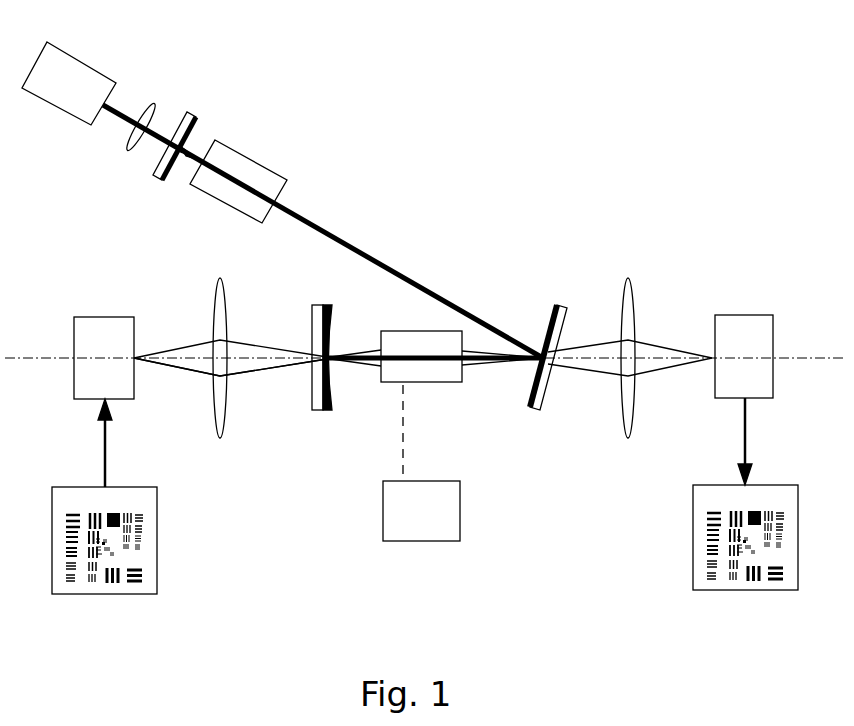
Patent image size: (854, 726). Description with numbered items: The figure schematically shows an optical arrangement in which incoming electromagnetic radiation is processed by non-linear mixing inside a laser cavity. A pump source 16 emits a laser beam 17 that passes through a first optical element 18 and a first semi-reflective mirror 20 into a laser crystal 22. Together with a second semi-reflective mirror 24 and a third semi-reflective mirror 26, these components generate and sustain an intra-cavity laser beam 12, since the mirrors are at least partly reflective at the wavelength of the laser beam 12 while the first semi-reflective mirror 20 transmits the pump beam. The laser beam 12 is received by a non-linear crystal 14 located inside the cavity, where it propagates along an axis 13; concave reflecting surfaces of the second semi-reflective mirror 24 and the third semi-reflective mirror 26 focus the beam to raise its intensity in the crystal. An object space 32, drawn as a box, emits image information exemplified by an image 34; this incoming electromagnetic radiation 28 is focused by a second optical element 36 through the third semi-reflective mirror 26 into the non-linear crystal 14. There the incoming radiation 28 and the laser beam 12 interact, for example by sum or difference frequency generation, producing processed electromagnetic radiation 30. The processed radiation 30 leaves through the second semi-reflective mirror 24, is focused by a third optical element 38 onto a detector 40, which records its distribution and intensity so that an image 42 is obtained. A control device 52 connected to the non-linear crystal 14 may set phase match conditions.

The intra-cavity laser beam 12 is at (316, 224).
The axis 13 is at (248, 365).
The non-linear crystal 14 is at (453, 372).
The pump source 16 is at (77, 63).
The laser beam 17 is at (116, 117).
The first optical element 18 is at (148, 100).
The first semi-reflective mirror 20 is at (197, 117).
The laser crystal 22 is at (282, 150).
The second semi-reflective mirror 24 is at (565, 306).
The third semi-reflective mirror 26 is at (325, 305).
The incoming electromagnetic radiation 28 is at (255, 348).
The processed electromagnetic radiation 30 is at (598, 363).
The object space 32 is at (105, 322).
The image 34 is at (152, 493).
The second optical element 36 is at (217, 302).
The third optical element 38 is at (630, 293).
The detector 40 is at (733, 323).
The image 42 is at (700, 495).
The control device 52 is at (427, 541).